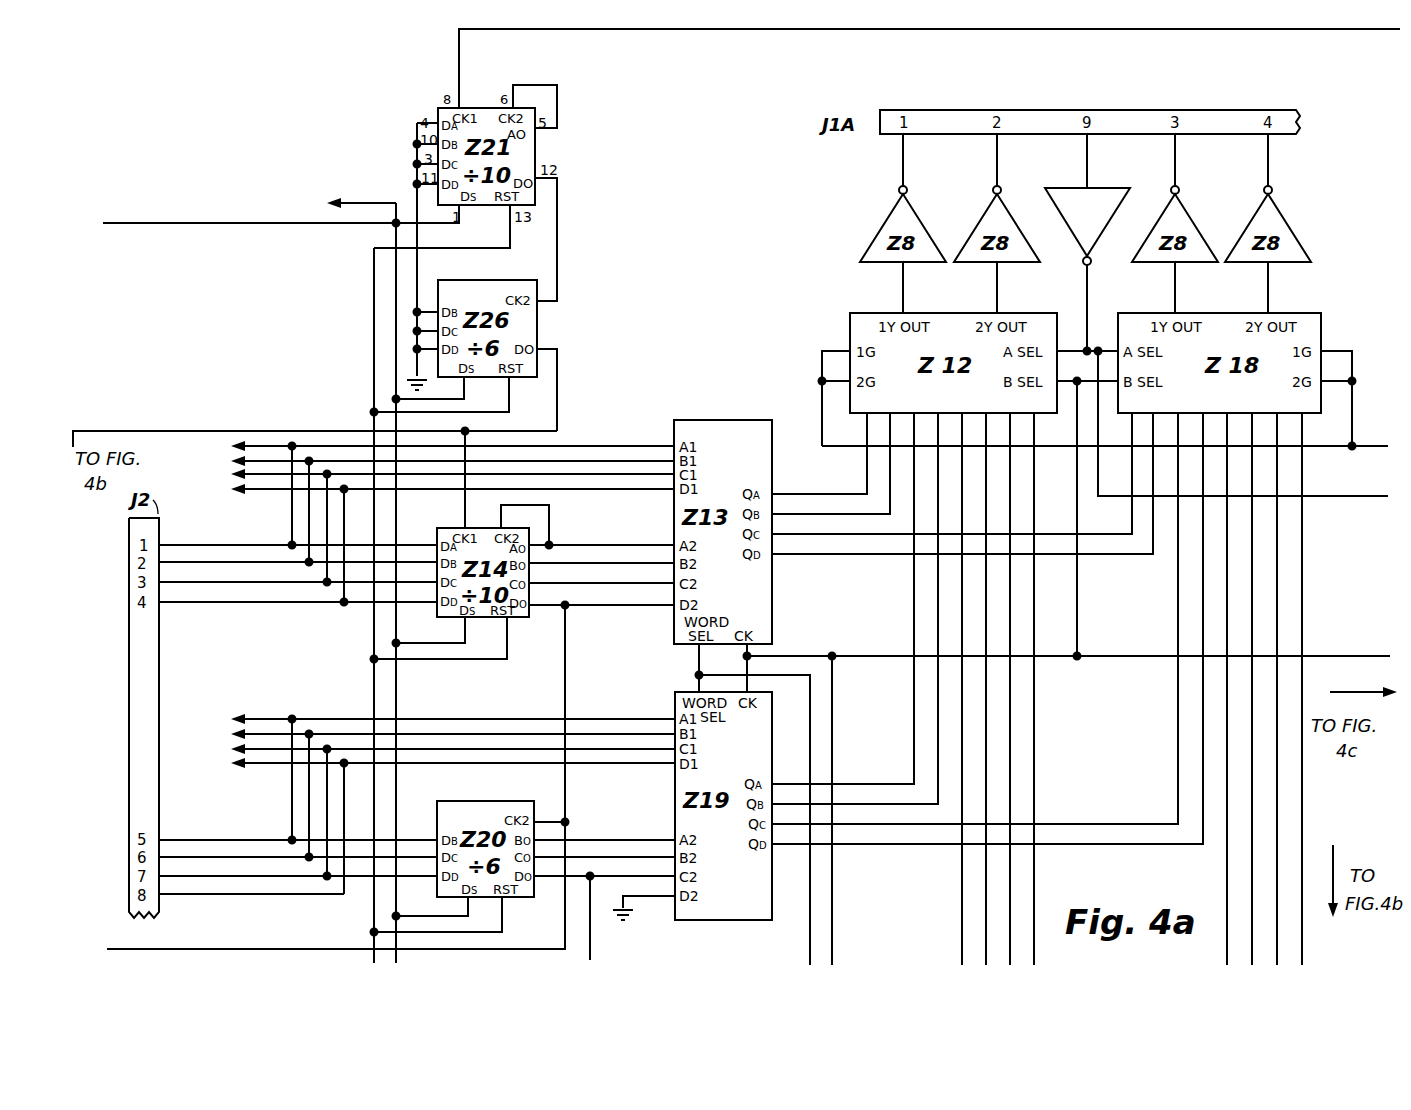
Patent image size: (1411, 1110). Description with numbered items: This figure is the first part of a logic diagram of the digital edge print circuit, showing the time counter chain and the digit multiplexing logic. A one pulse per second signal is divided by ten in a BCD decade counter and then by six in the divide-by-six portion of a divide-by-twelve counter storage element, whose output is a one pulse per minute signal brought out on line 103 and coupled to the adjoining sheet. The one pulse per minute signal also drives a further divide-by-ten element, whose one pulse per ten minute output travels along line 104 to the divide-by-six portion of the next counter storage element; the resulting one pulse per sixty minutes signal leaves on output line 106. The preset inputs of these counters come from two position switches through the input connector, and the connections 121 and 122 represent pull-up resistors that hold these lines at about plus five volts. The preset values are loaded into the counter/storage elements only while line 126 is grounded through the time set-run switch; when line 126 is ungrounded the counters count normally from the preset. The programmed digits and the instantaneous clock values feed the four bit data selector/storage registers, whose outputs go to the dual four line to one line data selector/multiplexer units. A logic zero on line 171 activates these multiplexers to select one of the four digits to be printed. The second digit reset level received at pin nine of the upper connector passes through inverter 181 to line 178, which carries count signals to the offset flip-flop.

The line 103 is at (130, 429).
The line 104 is at (568, 686).
The output line 106 is at (591, 925).
The connections 121 is at (433, 467).
The connections 122 is at (432, 741).
The line 126 is at (373, 202).
The line 171 is at (1365, 445).
The line 178 is at (1366, 497).
The inverter 181 is at (1110, 190).